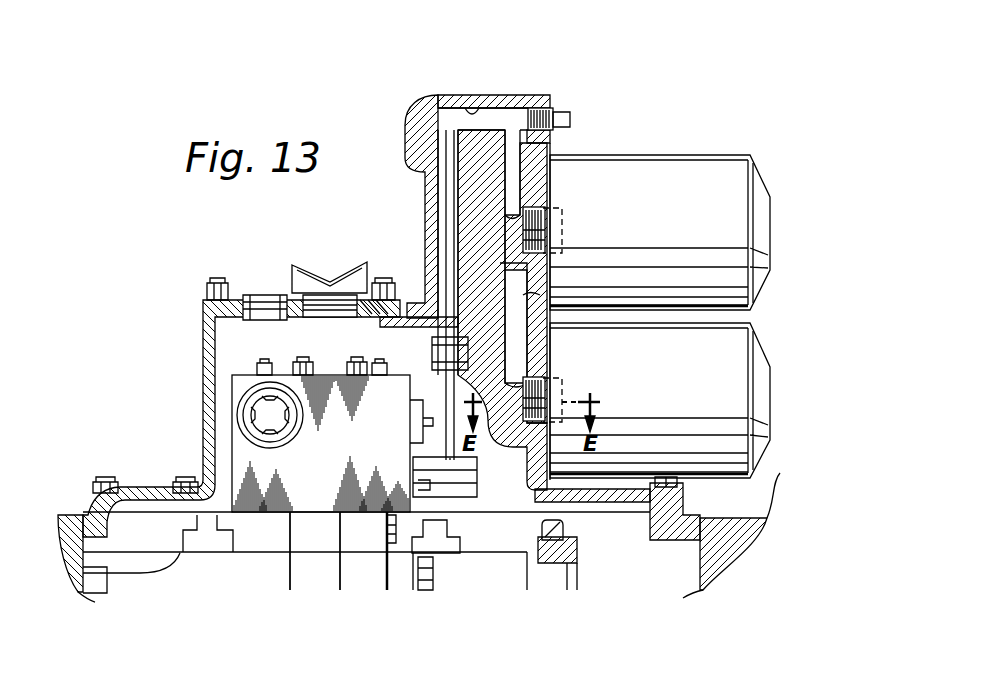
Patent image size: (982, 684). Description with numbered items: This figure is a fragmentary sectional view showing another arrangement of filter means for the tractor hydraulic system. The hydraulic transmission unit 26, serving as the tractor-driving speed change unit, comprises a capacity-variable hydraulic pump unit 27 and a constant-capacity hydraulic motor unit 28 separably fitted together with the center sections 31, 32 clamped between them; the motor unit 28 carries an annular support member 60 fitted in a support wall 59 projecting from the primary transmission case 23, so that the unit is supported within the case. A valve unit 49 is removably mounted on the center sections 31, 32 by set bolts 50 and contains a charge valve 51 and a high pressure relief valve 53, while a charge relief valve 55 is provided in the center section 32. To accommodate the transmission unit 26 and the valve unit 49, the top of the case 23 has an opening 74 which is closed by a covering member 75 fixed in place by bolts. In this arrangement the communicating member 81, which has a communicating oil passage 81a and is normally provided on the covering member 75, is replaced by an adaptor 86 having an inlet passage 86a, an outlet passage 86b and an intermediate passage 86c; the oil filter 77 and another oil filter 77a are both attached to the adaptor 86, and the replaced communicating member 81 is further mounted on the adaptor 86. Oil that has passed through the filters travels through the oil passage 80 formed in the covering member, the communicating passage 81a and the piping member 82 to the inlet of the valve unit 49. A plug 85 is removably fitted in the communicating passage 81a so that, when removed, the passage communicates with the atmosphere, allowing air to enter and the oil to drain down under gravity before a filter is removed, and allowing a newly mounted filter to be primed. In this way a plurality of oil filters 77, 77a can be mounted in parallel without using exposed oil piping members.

The primary transmission case 23 is at (65, 515).
The hydraulic transmission unit 26 is at (274, 604).
The hydraulic pump unit 27 is at (230, 575).
The hydraulic motor unit 28 is at (442, 580).
The center section 31 is at (310, 570).
The center section 32 is at (358, 570).
The valve unit 49 is at (237, 374).
The set bolts 50 is at (356, 360).
The charge valve 51 is at (412, 426).
The high pressure relief valve 53 is at (285, 437).
The charge relief valve 55 is at (386, 523).
The support wall 59 is at (542, 532).
The annular support member 60 is at (578, 545).
The opening 74 is at (125, 500).
The covering member 75 is at (205, 392).
The oil filter 77 is at (775, 393).
The oil filter 77a is at (768, 190).
The oil passage 80 is at (523, 356).
The communicating member 81 is at (505, 100).
The communicating oil passage 81a is at (472, 110).
The piping member 82 is at (440, 385).
The plug 85 is at (570, 119).
The adaptor 86 is at (426, 245).
The inlet passage 86a is at (527, 300).
The outlet passage 86b is at (526, 195).
The intermediate passage 86c is at (440, 193).